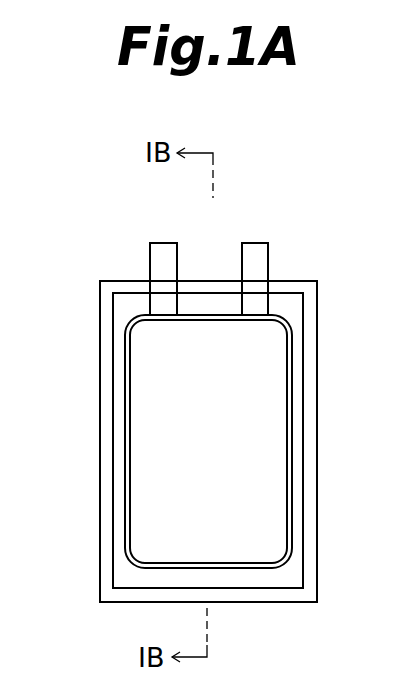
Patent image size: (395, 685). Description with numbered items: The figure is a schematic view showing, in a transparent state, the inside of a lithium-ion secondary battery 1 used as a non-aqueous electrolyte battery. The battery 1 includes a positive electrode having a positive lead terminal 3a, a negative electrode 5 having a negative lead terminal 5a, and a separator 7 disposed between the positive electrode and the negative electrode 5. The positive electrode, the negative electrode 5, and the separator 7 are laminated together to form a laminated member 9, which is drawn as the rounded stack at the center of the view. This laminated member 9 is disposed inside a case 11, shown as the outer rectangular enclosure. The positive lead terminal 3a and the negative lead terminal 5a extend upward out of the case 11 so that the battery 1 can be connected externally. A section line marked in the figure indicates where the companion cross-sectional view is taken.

The lithium-ion secondary battery 1 is at (310, 238).
The positive lead terminal 3a is at (257, 252).
The negative lead terminal 5a is at (162, 252).
The negative electrode 5 is at (153, 355).
The separator 7 is at (126, 368).
The laminated member 9 is at (129, 420).
The case 11 is at (100, 497).